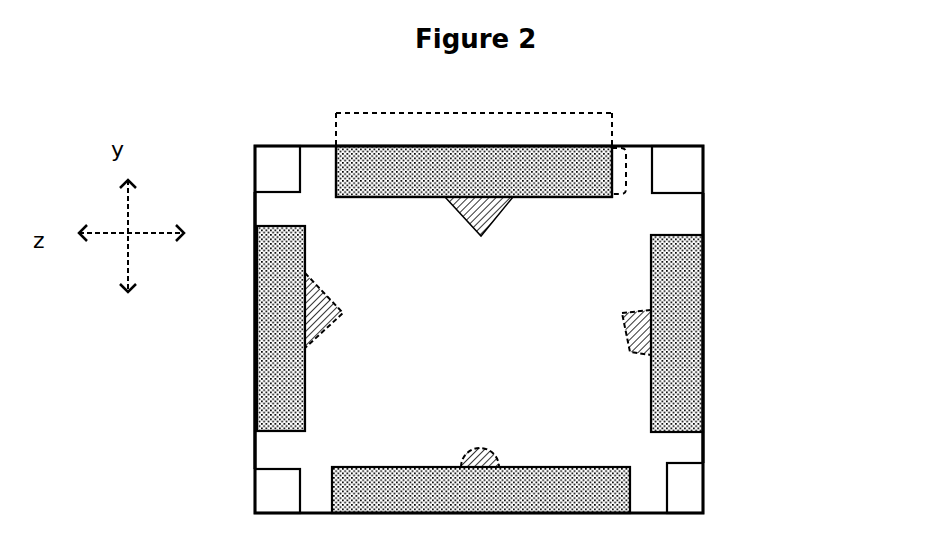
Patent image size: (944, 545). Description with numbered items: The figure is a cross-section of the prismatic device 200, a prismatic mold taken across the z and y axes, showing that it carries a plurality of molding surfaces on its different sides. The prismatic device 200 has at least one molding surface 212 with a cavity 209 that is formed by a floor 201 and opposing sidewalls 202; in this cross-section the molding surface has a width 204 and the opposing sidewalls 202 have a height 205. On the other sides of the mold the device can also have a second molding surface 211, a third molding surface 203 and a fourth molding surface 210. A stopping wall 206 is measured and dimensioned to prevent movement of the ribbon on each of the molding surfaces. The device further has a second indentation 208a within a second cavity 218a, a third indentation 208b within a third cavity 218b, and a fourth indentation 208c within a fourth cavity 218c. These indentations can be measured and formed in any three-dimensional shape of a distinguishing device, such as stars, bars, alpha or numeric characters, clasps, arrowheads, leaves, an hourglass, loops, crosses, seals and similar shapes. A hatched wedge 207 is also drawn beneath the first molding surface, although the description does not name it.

The prismatic device 200 is at (238, 94).
The floor 201 is at (382, 197).
The opposing sidewalls 202 is at (327, 163).
The third molding surface 203 is at (705, 348).
The width 204 is at (478, 112).
The height 205 is at (627, 172).
The stopping wall 206 is at (257, 495).
The hatched wedge 207 is at (493, 207).
The second indentation 208a is at (328, 317).
The third indentation 208b is at (632, 347).
The fourth indentation 208c is at (460, 452).
The cavity 209 is at (530, 171).
The fourth molding surface 210 is at (632, 496).
The second molding surface 211 is at (255, 308).
The molding surface 212 is at (652, 152).
The second cavity 218a is at (273, 387).
The third cavity 218b is at (682, 314).
The fourth cavity 218c is at (523, 495).